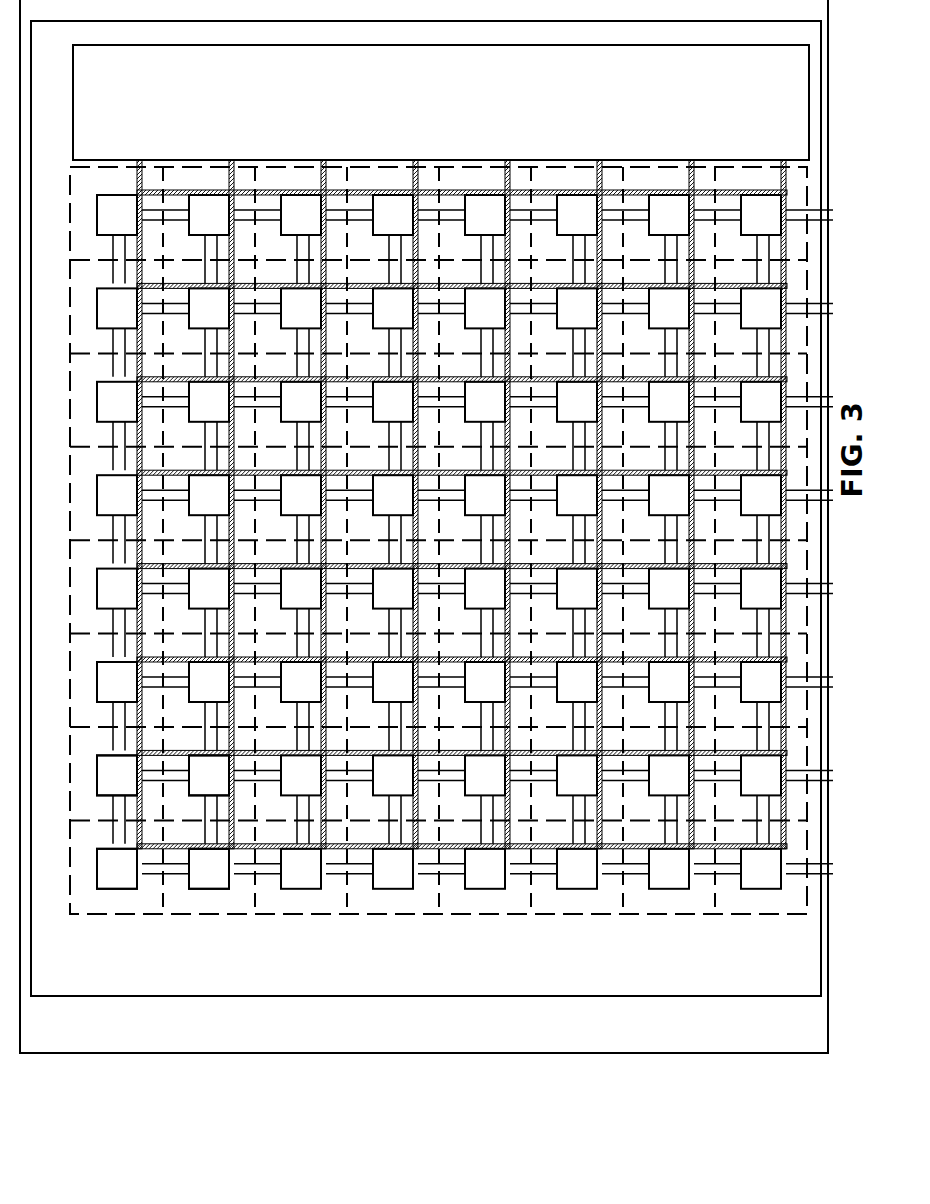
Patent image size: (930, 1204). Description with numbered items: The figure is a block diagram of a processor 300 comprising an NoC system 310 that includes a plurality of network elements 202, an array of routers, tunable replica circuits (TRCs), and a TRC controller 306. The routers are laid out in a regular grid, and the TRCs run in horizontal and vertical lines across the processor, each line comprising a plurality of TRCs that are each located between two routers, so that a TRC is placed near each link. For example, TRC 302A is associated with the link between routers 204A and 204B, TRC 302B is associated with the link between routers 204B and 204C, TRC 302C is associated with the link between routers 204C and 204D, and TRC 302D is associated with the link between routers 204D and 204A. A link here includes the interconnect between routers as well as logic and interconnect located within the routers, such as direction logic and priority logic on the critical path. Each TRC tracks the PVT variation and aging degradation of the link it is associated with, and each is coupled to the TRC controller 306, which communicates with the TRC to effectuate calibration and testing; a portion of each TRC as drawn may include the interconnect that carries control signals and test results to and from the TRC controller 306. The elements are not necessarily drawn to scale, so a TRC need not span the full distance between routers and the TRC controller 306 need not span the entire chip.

The processor 300 is at (157, 1053).
The NoC system 310 is at (165, 997).
The TRC controller 306 is at (441, 102).
The network elements 202 is at (106, 915).
The router 204A is at (97, 870).
The router 204B is at (97, 777).
The router 204C is at (222, 795).
The router 204D is at (207, 889).
The TRC 302A is at (138, 814).
The TRC 302B is at (152, 751).
The TRC 302C is at (229, 802).
The TRC 302D is at (171, 849).